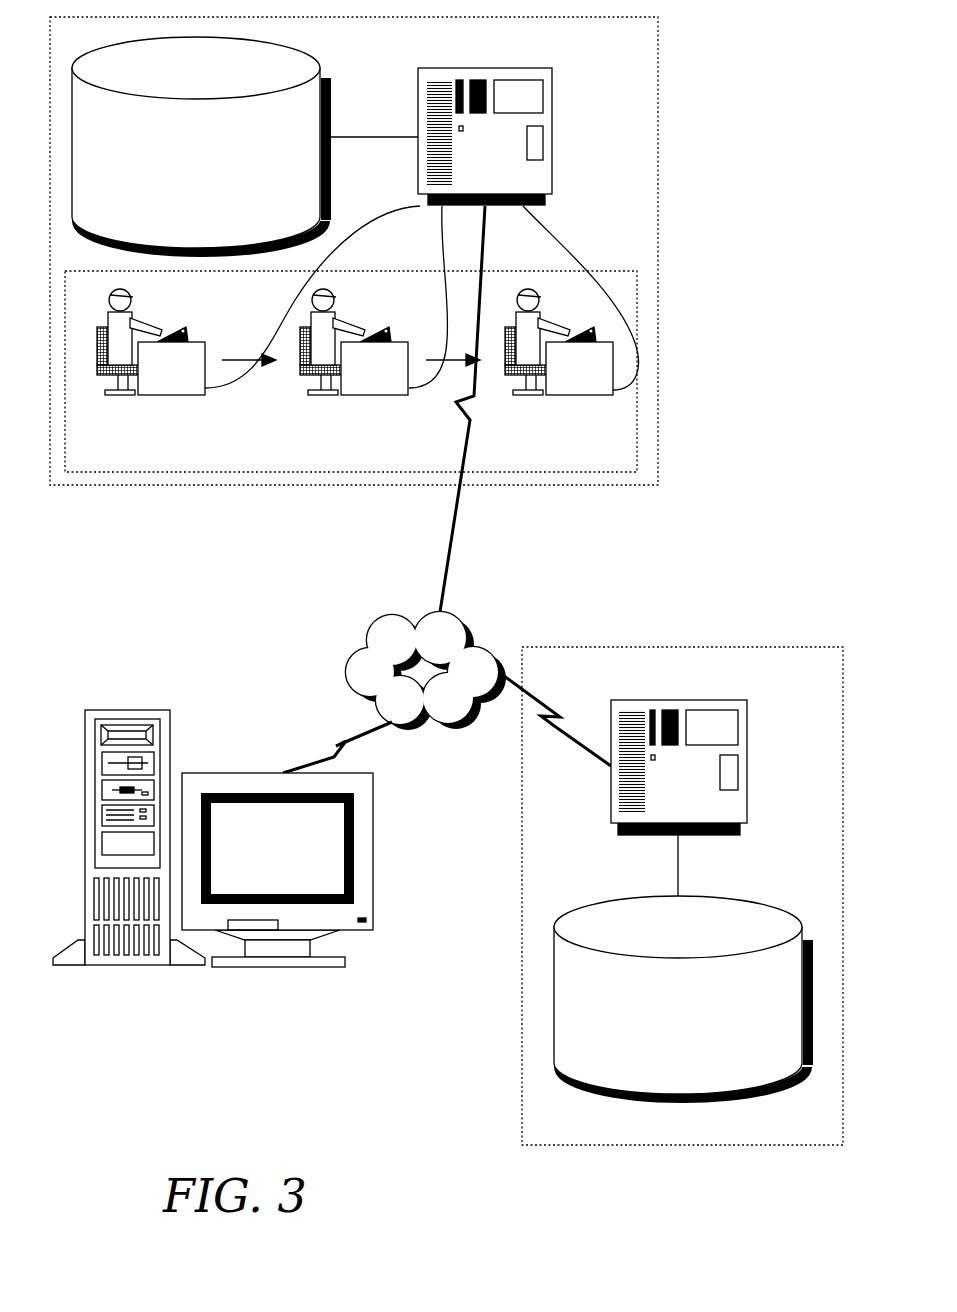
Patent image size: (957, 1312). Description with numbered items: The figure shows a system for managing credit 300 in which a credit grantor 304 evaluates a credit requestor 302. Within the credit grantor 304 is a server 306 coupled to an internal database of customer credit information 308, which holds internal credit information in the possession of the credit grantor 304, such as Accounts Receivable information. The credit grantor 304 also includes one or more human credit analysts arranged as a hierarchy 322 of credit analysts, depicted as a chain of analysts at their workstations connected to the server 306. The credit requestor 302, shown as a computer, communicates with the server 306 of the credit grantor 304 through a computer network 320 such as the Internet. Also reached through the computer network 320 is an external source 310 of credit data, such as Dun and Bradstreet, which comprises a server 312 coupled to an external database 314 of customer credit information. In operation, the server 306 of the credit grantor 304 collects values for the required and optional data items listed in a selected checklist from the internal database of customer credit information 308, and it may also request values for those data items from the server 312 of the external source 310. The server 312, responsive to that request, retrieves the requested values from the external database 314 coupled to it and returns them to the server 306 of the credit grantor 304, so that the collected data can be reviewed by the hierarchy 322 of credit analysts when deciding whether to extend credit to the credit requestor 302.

The system for managing credit 300 is at (782, 46).
The credit requestor 302 is at (225, 773).
The credit grantor 304 is at (658, 253).
The server 306 is at (553, 120).
The internal database of customer credit information 308 is at (332, 100).
The external source of credit data 310 is at (686, 647).
The server of external source of credit information 312 is at (747, 764).
The external database 314 is at (754, 912).
The computer network 320 is at (474, 640).
The hierarchy of credit analysts 322 is at (638, 372).